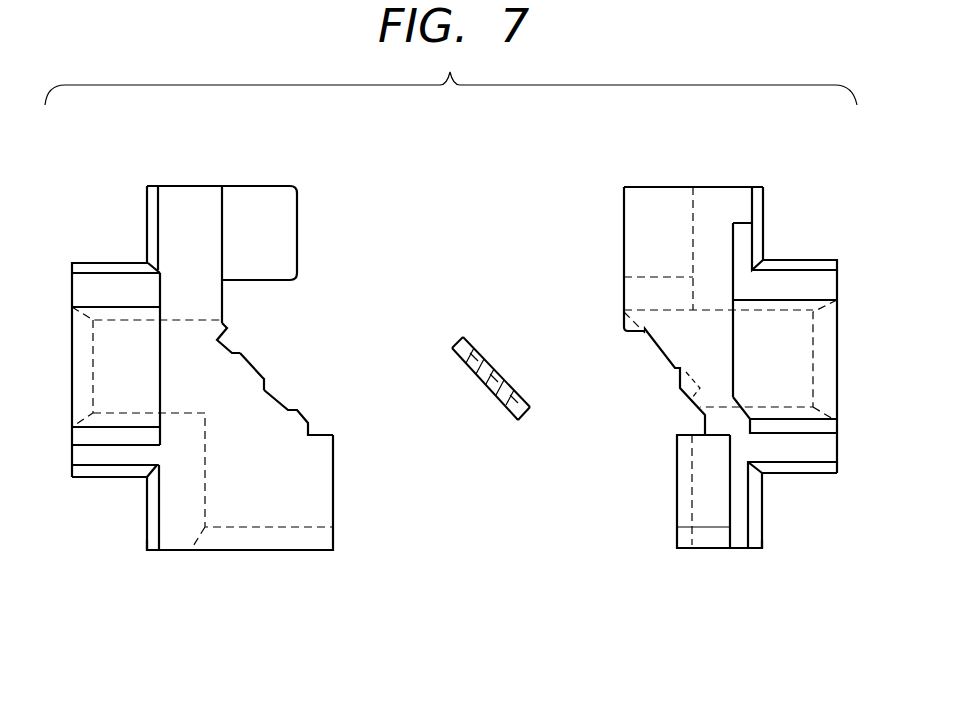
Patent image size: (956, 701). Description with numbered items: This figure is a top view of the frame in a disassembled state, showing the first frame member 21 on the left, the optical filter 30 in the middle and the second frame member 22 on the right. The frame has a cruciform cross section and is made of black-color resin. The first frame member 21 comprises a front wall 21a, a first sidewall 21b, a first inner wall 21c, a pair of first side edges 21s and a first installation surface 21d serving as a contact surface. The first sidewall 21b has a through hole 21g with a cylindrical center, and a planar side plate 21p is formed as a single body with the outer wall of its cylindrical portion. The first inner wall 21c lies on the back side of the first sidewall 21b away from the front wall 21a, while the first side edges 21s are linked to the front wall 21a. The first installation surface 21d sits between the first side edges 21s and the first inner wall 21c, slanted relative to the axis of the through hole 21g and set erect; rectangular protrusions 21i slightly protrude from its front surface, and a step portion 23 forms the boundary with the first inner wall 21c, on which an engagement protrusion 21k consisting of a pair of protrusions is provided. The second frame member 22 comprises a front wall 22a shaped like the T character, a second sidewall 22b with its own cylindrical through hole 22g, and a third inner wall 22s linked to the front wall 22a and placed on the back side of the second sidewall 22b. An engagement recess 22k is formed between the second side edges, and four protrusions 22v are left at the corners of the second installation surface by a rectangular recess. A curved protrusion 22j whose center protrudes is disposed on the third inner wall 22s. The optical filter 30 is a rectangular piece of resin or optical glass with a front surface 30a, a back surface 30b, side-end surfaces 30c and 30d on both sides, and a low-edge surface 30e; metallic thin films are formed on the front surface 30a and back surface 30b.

The first frame member 21 is at (292, 175).
The front wall 21a is at (240, 553).
The first sidewall 21b is at (147, 212).
The first inner wall 21c is at (223, 203).
The first installation surface 21d is at (302, 418).
The through hole 21g is at (118, 413).
The protrusion 21i is at (262, 372).
The engagement protrusion 21k is at (297, 230).
The side plate 21p is at (73, 452).
The first side edges 21s is at (333, 513).
The step portion 23 is at (225, 333).
The optical filter 30 is at (458, 333).
The front surface 30a is at (478, 375).
The back surface 30b is at (505, 378).
The side-end surface 30c is at (452, 347).
The side-end surface 30d is at (530, 417).
The low-edge surface 30e is at (500, 405).
The second frame member 22 is at (740, 172).
The front wall 22a is at (740, 548).
The second sidewall 22b is at (765, 212).
The through hole 22g is at (783, 312).
The curved protrusion 22j is at (678, 495).
The engagement recess 22k is at (693, 215).
The third inner wall 22s is at (678, 526).
The protrusions 22v is at (645, 333).